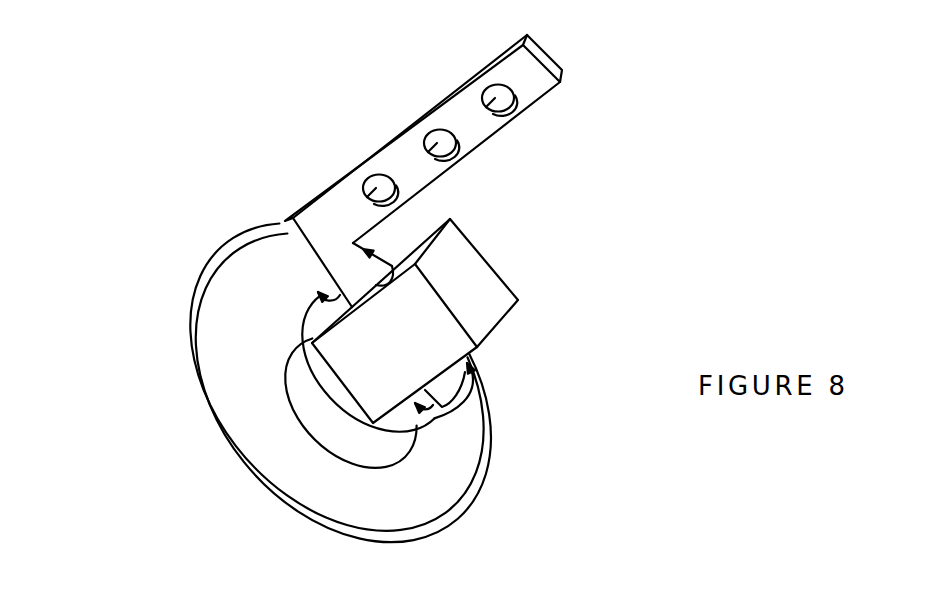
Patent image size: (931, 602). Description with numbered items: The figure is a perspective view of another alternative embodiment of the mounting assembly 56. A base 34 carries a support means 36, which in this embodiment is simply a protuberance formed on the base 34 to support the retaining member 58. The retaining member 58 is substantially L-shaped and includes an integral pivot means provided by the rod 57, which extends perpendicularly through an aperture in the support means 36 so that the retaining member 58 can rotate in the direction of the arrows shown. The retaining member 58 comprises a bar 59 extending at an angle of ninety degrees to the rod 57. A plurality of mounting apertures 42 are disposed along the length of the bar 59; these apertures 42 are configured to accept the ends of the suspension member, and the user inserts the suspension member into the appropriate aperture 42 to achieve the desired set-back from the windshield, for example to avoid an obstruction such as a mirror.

The base 34 is at (462, 447).
The support means 36 is at (480, 290).
The mounting apertures 42 is at (482, 108).
The mounting assembly 56 is at (377, 250).
The rod 57 is at (357, 270).
The retaining member 58 is at (503, 169).
The bar 59 is at (556, 62).